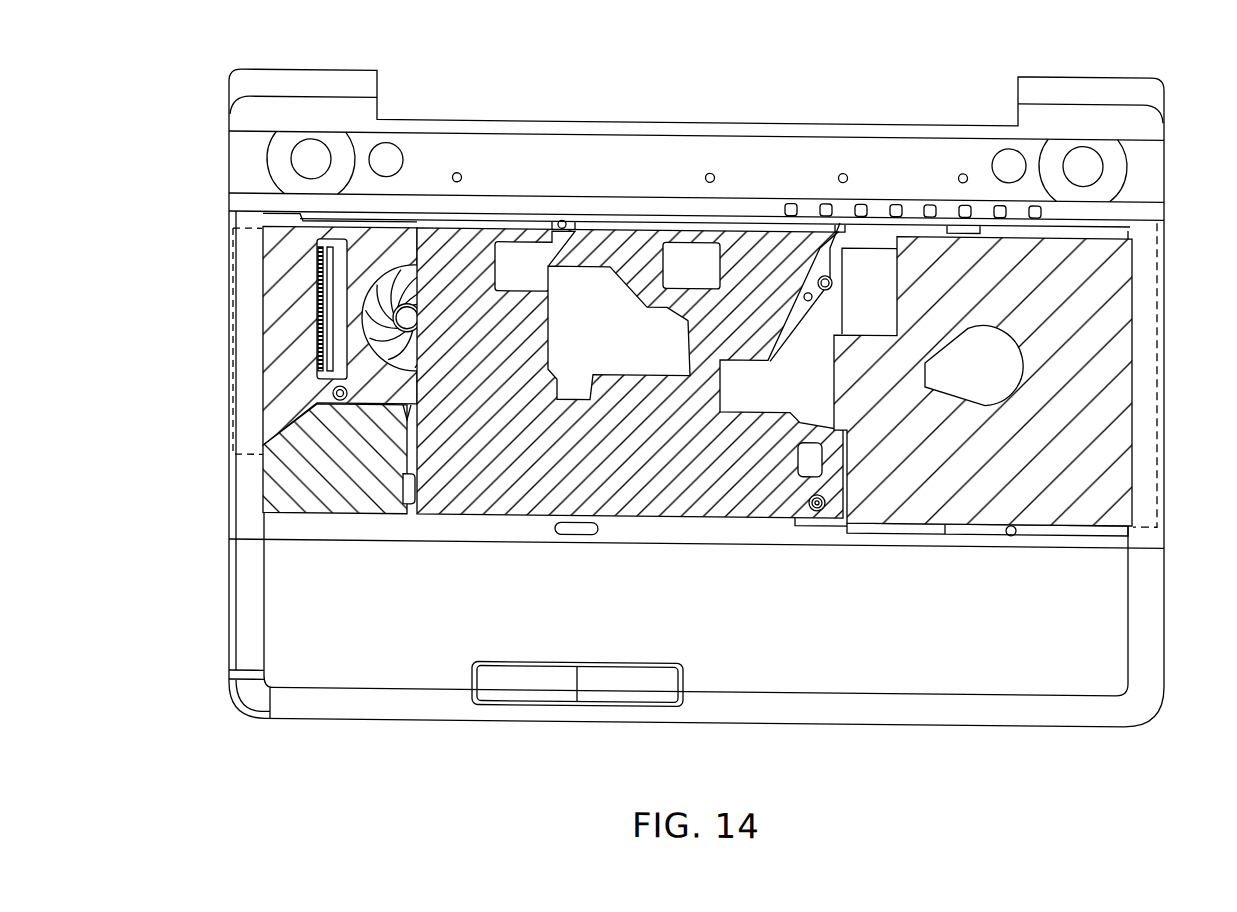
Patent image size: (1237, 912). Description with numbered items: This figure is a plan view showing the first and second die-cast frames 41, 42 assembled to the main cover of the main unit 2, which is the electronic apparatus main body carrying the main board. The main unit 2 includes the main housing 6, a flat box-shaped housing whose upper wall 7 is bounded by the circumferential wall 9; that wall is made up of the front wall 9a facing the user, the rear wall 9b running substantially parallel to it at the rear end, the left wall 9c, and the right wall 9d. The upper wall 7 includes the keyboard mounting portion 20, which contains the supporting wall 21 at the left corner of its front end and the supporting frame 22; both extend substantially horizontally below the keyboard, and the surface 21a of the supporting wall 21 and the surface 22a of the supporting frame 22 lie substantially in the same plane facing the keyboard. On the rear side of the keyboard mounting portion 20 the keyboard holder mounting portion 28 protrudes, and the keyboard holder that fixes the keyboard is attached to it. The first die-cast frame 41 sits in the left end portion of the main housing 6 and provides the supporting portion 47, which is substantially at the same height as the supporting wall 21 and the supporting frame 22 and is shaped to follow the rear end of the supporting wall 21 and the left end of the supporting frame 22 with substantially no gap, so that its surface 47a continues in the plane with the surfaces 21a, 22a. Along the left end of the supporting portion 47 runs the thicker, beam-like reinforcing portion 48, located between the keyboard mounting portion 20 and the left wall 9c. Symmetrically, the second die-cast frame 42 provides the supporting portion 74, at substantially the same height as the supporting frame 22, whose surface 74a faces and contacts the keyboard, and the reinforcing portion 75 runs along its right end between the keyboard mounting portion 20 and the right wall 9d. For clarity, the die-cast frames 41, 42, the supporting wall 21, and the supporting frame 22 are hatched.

The main unit 2 is at (697, 420).
The main housing 6 is at (701, 427).
The upper wall 7 is at (433, 668).
The circumferential wall 9 is at (701, 423).
The front wall 9a is at (812, 722).
The rear wall 9b is at (887, 118).
The left wall 9c is at (236, 521).
The right wall 9d is at (1165, 322).
The keyboard mounting portion 20 is at (695, 413).
The supporting wall 21 is at (339, 494).
The surface 21a is at (364, 466).
The supporting frame 22 is at (630, 404).
The surface 22a is at (582, 448).
The keyboard holder mounting portion 28 is at (620, 226).
The first die-cast frame 41 is at (315, 335).
The second die-cast frame 42 is at (983, 423).
The supporting portion 47 is at (318, 335).
The surface 47a is at (317, 328).
The reinforcing portion 48 is at (233, 358).
The supporting portion 74 is at (983, 423).
The surface 74a is at (1083, 444).
The reinforcing portion 75 is at (1157, 420).